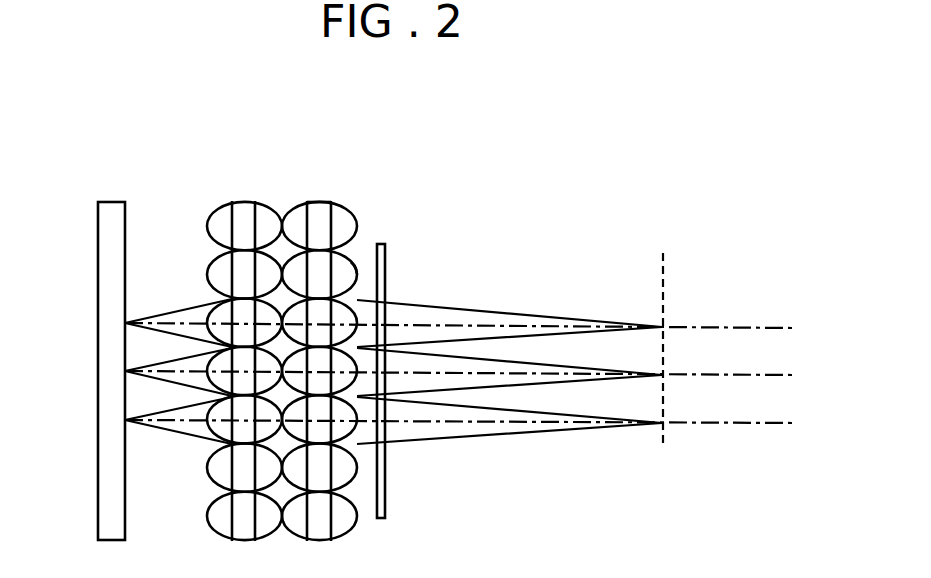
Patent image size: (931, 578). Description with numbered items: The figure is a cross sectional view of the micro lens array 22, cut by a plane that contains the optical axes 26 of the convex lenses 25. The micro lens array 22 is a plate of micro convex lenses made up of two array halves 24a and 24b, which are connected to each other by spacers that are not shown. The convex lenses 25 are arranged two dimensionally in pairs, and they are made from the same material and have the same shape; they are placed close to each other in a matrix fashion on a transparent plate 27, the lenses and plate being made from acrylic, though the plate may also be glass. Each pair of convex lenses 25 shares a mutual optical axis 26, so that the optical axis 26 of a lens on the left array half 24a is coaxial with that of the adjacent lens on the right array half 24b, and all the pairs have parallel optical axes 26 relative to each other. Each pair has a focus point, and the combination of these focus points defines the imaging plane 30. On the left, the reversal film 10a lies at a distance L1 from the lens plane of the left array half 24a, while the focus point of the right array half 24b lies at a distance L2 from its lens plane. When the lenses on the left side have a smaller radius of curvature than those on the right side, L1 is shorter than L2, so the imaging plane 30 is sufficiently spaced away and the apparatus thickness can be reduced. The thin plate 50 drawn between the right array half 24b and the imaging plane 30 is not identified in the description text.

The reversal film 10a is at (112, 202).
The micro lens array 22 is at (282, 313).
The left array half 24a is at (243, 186).
The right array half 24b is at (320, 186).
The transparent plate 27 is at (322, 215).
The convex lens 25 is at (338, 257).
The transparent plate 50 is at (386, 493).
The imaging plane 30 is at (665, 310).
The optical axis 26 is at (733, 425).
The distance between lens plane of left array half and reversal film L1 is at (207, 273).
The distance between lens plane of right array half and focus point L2 is at (663, 276).